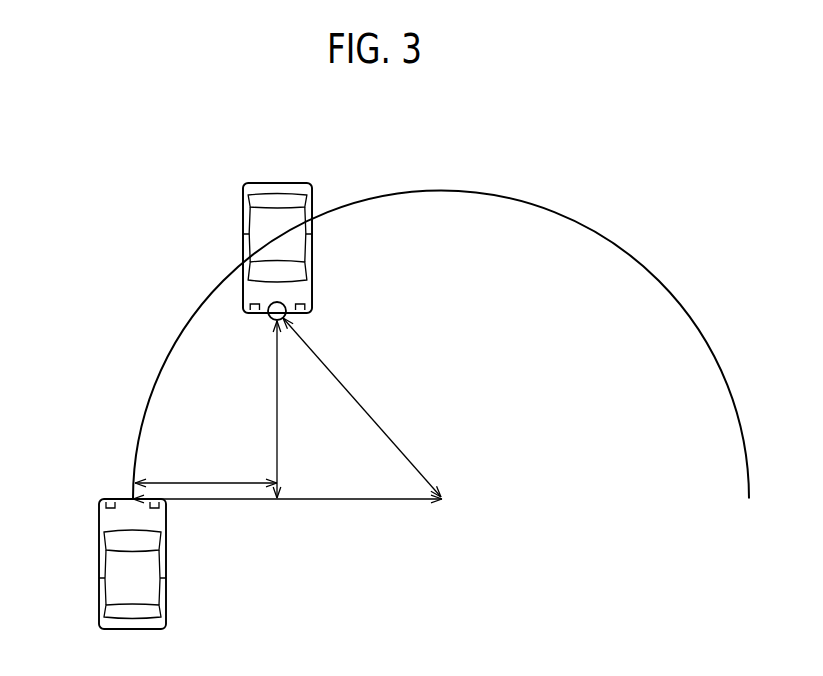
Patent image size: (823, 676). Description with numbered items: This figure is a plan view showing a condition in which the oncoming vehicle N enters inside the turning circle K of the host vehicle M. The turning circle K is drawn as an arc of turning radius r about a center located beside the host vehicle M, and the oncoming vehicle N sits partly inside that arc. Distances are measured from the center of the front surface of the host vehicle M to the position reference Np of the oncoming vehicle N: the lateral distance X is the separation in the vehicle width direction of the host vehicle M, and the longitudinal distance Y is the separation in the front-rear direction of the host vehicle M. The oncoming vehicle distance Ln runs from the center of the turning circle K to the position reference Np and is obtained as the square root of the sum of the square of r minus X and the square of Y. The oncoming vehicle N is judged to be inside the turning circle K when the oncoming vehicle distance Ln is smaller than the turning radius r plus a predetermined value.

The turning circle K is at (440, 191).
The oncoming vehicle N is at (273, 181).
The host vehicle M is at (98, 553).
The position reference Np is at (268, 316).
The turning radius r is at (287, 518).
The lateral distance X is at (206, 466).
The longitudinal distance Y is at (292, 409).
The oncoming vehicle distance Ln is at (362, 407).